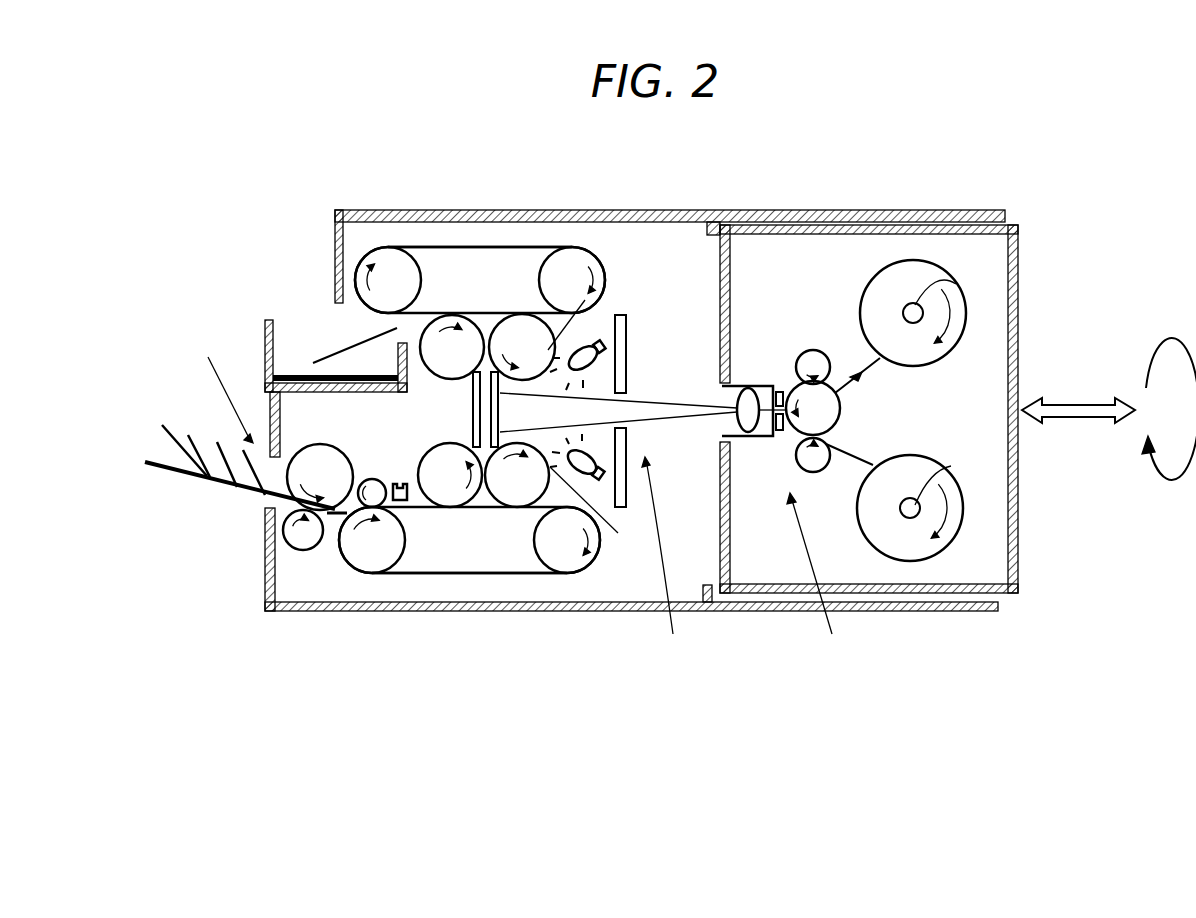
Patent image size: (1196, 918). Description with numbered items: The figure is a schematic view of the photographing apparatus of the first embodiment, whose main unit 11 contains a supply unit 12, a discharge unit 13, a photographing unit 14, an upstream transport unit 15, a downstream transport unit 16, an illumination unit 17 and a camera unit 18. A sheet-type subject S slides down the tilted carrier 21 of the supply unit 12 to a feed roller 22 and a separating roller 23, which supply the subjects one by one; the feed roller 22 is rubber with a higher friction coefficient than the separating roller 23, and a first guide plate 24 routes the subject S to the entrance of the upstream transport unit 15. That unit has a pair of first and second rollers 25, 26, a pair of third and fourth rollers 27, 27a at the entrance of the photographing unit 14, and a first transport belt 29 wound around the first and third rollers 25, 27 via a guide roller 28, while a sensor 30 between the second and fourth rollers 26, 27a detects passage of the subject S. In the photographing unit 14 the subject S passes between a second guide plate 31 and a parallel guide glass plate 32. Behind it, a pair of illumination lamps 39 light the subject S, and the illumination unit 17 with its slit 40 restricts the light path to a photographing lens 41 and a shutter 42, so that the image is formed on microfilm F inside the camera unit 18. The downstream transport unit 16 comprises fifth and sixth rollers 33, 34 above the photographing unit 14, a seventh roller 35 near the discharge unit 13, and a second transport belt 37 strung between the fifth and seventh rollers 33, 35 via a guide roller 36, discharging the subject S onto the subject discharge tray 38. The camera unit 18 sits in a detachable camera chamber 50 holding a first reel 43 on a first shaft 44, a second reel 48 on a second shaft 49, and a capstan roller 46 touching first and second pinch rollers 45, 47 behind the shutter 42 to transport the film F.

The main unit of the photographing apparatus 11 is at (555, 207).
The supply unit 12 is at (220, 384).
The discharge unit 13 is at (312, 327).
The photographing unit 14 is at (465, 410).
The upstream transport unit 15 is at (472, 556).
The downstream transport unit 16 is at (475, 268).
The illumination unit 17 is at (668, 560).
The camera unit 18 is at (818, 578).
The tilted carrier 21 is at (165, 470).
The feed roller 22 is at (315, 470).
The separating roller 23 is at (288, 540).
The first guide plate 24 is at (337, 523).
The first roller 25 is at (362, 560).
The second roller 26 is at (365, 478).
The third roller 27 is at (513, 497).
The fourth roller 27a is at (440, 492).
The guide roller 28 is at (566, 565).
The first transport belt 29 is at (532, 577).
The sensor 30 is at (400, 484).
The second guide plate 31 is at (473, 430).
The guide glass plate 32 is at (479, 405).
The fifth roller 33 is at (483, 272).
The sixth roller 34 is at (451, 330).
The seventh roller 35 is at (383, 258).
The guide roller 36 is at (568, 262).
The upper belt run 37 is at (515, 245).
The subject discharge tray 38 is at (266, 335).
The illumination lamps 39 is at (600, 342).
The slit 40 is at (628, 355).
The photographing lens 41 is at (742, 420).
The shutter 42 is at (778, 448).
The first reel 43 is at (912, 270).
The first shaft 44 is at (956, 283).
The first pinch roller 45 is at (812, 350).
The capstan roller 46 is at (803, 398).
The second pinch roller 47 is at (818, 472).
The second reel 48 is at (909, 552).
The second shaft 49 is at (951, 466).
The camera chamber 50 is at (1022, 262).
The subject S is at (162, 425).
The microfilm F is at (870, 462).